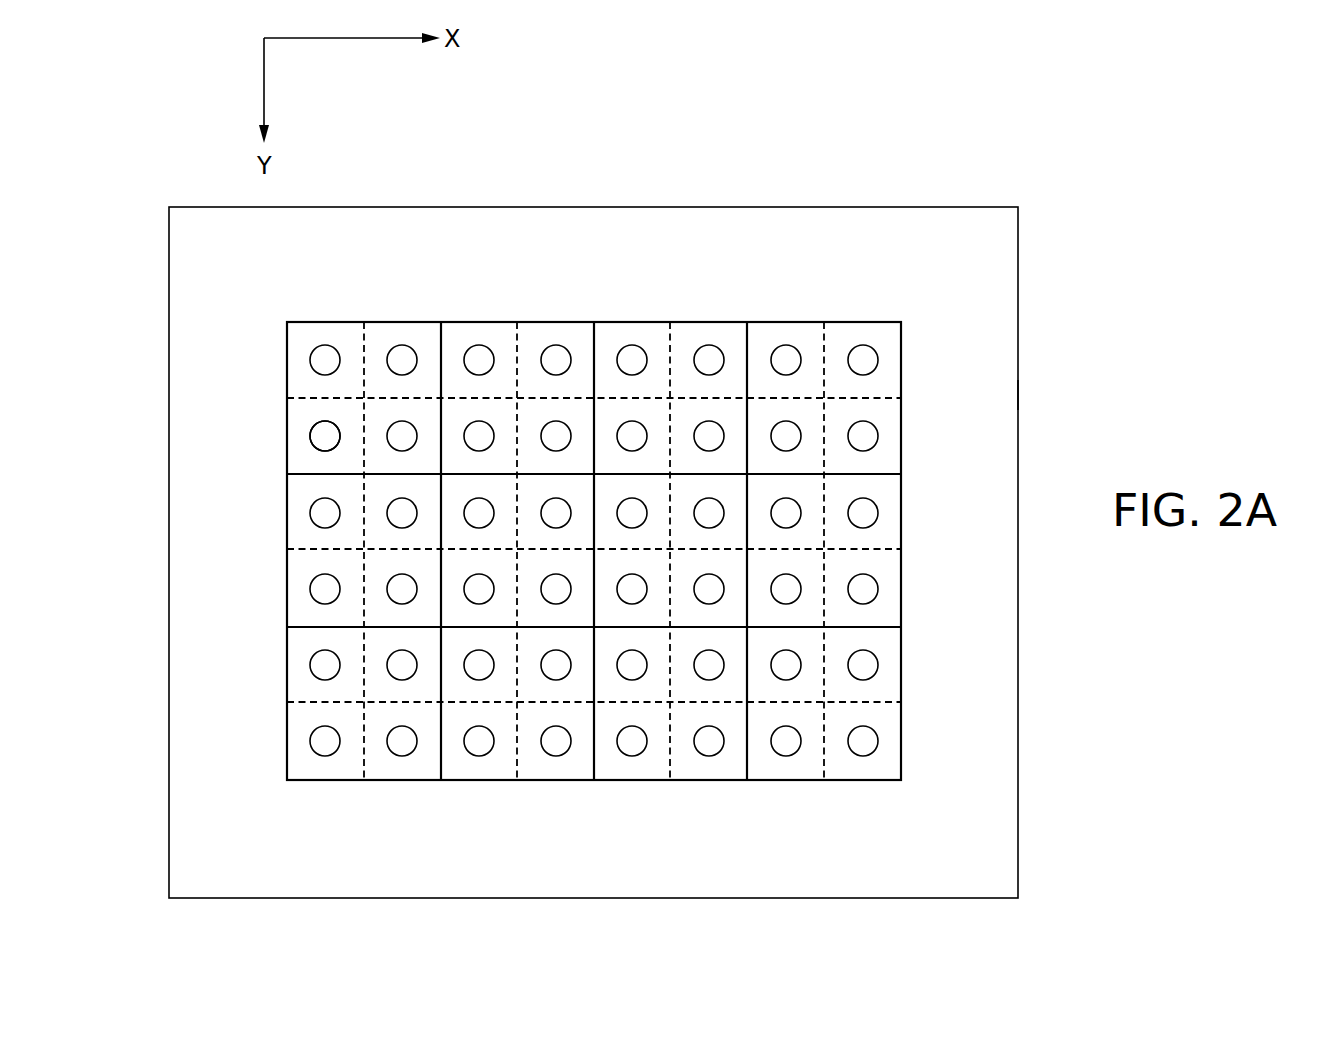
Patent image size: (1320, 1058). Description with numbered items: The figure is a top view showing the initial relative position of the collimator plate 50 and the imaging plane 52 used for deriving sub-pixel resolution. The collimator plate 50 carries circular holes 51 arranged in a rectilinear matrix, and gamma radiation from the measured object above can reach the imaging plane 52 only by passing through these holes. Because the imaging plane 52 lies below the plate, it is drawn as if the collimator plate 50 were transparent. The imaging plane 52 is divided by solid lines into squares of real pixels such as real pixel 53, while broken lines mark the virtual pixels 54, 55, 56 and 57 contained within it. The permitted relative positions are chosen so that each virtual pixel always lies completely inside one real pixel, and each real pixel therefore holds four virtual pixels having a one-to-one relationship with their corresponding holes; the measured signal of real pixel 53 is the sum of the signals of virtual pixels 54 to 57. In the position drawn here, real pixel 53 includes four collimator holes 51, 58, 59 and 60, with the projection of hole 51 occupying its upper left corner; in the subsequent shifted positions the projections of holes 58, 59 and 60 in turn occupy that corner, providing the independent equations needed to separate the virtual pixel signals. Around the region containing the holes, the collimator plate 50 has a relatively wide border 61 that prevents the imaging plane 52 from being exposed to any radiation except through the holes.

The collimator plate 50 is at (887, 213).
The circular holes 51 is at (316, 352).
The imaging plane 52 is at (907, 527).
The real pixel 53 is at (413, 335).
The virtual pixel 54 is at (332, 333).
The virtual pixel 55 is at (378, 335).
The virtual pixel 56 is at (297, 399).
The virtual pixel 57 is at (373, 453).
The collimator hole 58 is at (417, 353).
The collimator hole 59 is at (403, 451).
The collimator hole 60 is at (326, 451).
The border 61 is at (998, 398).